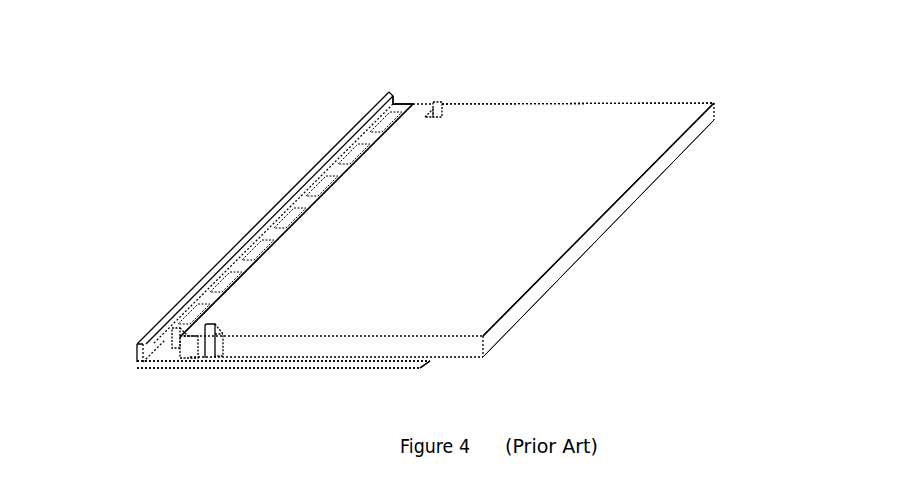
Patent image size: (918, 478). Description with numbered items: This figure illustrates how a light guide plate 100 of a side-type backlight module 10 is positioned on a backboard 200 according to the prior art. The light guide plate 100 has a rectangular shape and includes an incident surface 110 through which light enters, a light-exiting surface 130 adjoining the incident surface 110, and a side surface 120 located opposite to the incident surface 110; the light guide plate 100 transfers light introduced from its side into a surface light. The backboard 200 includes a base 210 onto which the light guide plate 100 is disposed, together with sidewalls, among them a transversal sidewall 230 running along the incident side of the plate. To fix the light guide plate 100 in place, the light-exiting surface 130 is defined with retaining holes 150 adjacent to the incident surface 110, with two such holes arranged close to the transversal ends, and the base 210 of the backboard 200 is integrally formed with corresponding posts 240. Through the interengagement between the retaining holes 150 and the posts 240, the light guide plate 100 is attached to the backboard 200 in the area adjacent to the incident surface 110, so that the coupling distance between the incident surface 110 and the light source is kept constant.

The backlight module 10 is at (338, 91).
The light guide plate 100 is at (714, 103).
The incident surface 110 is at (408, 104).
The side surface 120 is at (620, 215).
The light-exiting surface 130 is at (523, 118).
The retaining holes 150 is at (446, 107).
The backboard 200 is at (137, 364).
The base 210 is at (296, 368).
The transversal sidewalls 230 is at (246, 236).
The posts 240 is at (202, 365).